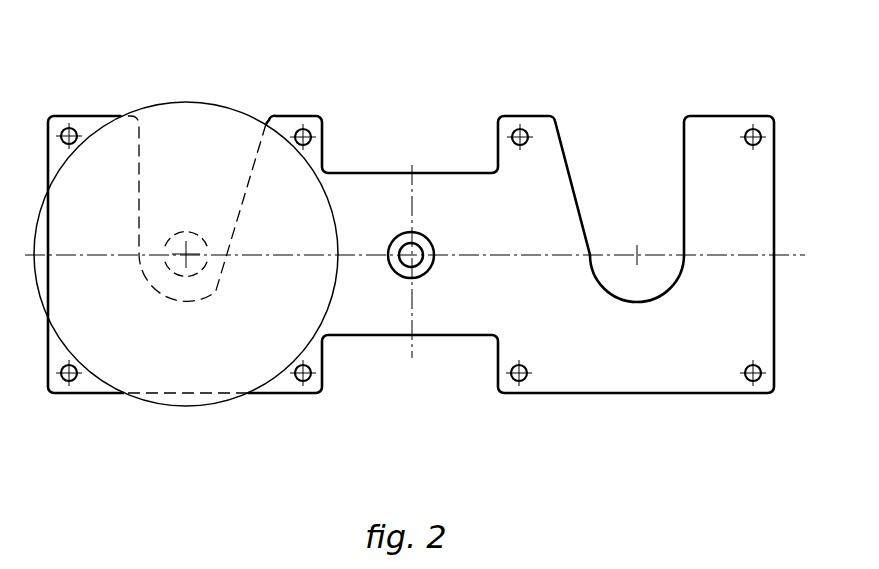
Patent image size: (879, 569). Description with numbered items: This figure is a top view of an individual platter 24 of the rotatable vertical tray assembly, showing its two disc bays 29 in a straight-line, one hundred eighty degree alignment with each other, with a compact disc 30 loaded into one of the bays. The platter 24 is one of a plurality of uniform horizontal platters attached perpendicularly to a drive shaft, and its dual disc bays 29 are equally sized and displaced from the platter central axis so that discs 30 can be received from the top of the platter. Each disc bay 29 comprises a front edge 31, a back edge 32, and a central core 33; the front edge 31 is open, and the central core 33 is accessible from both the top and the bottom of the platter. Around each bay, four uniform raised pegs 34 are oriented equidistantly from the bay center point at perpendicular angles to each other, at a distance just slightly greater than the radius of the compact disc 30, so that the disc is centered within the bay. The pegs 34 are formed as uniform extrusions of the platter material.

The platter 24 is at (647, 355).
The disc bay 29 is at (684, 190).
The compact disc 30 is at (157, 140).
The front edge 31 is at (728, 116).
The back edge 32 is at (555, 395).
The central core 33 is at (627, 300).
The raised pegs 34 is at (63, 130).